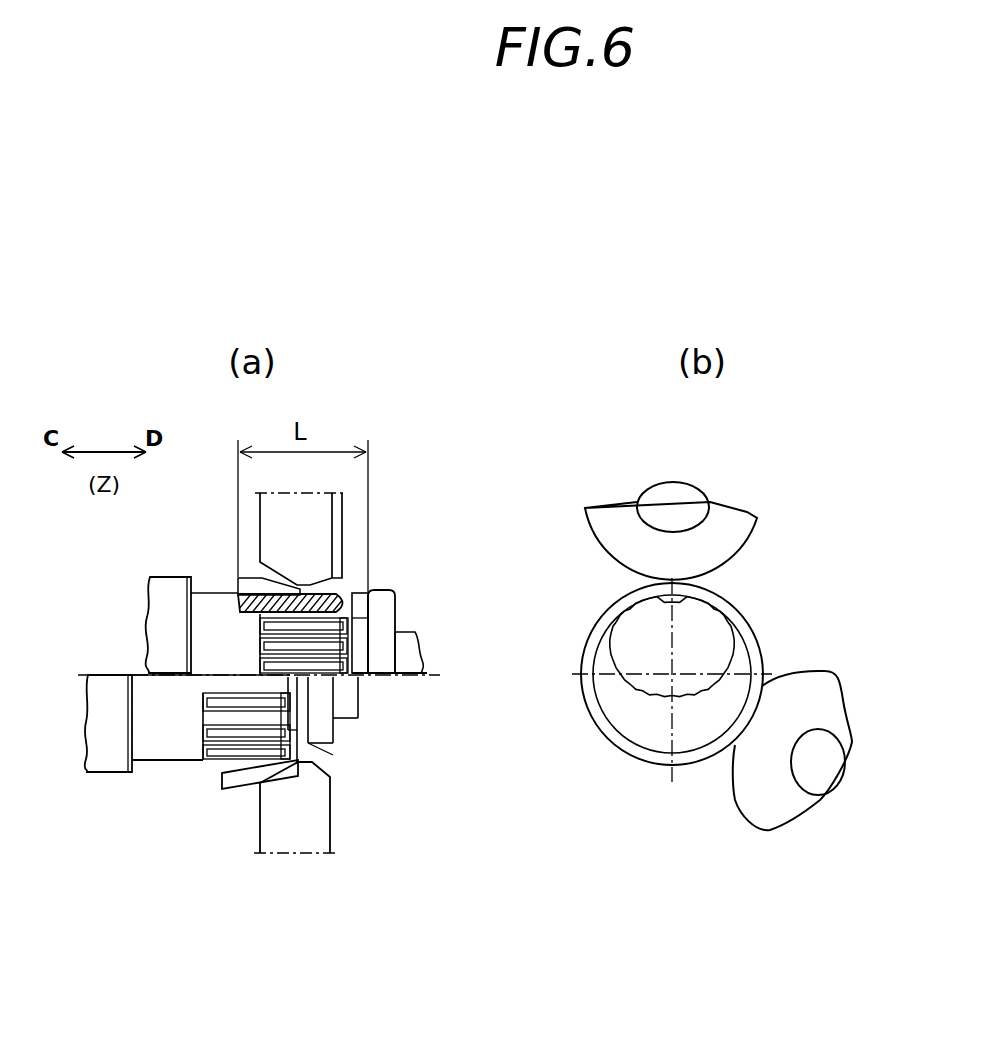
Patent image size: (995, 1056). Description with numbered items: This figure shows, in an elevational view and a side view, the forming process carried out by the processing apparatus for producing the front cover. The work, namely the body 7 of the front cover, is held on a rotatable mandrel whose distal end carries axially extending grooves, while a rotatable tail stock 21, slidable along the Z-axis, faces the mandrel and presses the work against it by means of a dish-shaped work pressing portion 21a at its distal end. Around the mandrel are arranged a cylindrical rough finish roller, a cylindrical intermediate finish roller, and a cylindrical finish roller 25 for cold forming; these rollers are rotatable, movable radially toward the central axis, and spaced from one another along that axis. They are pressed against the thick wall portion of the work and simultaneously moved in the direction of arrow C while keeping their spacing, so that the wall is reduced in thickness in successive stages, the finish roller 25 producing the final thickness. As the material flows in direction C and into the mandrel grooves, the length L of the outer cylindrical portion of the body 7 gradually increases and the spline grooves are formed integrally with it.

The body 7 is at (358, 603).
The tail stock 21 is at (408, 642).
The work pressing portion 21a is at (382, 678).
The finish roller 25 is at (716, 502).